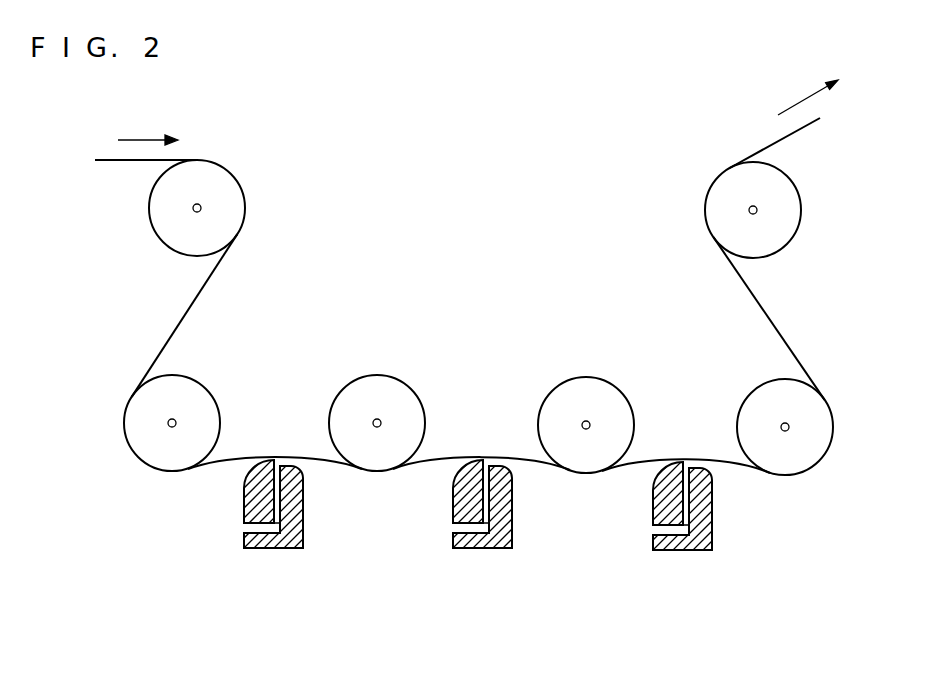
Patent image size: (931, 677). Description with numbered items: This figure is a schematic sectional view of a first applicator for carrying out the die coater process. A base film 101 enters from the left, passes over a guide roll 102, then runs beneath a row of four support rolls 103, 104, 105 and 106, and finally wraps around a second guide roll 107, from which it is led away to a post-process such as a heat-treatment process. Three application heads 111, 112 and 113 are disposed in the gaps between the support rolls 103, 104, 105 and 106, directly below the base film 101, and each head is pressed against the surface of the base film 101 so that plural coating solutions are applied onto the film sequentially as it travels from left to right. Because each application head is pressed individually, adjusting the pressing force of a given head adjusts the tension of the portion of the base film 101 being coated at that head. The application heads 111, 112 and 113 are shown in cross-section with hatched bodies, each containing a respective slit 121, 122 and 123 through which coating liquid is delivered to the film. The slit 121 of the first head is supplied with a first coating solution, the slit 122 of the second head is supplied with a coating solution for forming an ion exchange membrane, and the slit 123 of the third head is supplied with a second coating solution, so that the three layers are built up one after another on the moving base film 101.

The base film 101 is at (198, 301).
The guide roll 102 is at (225, 188).
The support roll 103 is at (200, 407).
The support roll 104 is at (408, 415).
The support roll 105 is at (608, 413).
The support roll 106 is at (815, 423).
The guide roll 107 is at (783, 208).
The application head 111 is at (278, 541).
The application head 112 is at (483, 548).
The application head 113 is at (683, 550).
The slit 121 is at (244, 527).
The slit 122 is at (453, 530).
The slit 123 is at (653, 533).